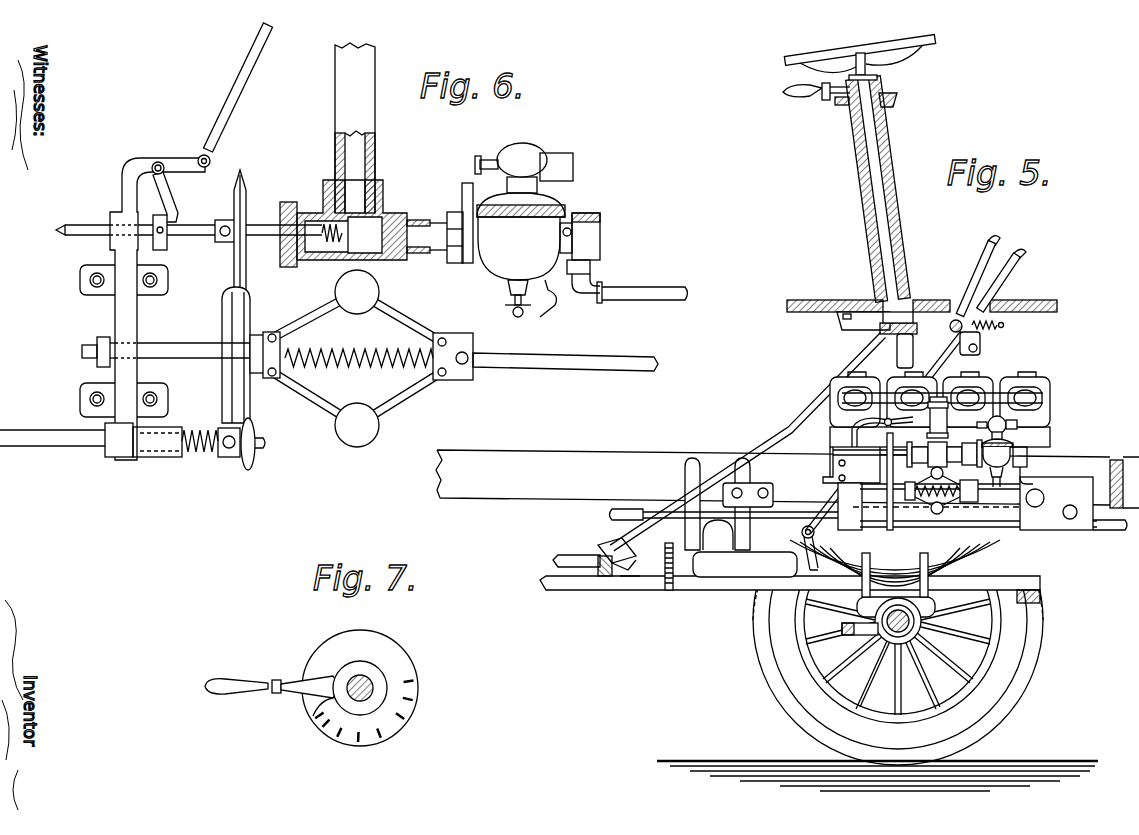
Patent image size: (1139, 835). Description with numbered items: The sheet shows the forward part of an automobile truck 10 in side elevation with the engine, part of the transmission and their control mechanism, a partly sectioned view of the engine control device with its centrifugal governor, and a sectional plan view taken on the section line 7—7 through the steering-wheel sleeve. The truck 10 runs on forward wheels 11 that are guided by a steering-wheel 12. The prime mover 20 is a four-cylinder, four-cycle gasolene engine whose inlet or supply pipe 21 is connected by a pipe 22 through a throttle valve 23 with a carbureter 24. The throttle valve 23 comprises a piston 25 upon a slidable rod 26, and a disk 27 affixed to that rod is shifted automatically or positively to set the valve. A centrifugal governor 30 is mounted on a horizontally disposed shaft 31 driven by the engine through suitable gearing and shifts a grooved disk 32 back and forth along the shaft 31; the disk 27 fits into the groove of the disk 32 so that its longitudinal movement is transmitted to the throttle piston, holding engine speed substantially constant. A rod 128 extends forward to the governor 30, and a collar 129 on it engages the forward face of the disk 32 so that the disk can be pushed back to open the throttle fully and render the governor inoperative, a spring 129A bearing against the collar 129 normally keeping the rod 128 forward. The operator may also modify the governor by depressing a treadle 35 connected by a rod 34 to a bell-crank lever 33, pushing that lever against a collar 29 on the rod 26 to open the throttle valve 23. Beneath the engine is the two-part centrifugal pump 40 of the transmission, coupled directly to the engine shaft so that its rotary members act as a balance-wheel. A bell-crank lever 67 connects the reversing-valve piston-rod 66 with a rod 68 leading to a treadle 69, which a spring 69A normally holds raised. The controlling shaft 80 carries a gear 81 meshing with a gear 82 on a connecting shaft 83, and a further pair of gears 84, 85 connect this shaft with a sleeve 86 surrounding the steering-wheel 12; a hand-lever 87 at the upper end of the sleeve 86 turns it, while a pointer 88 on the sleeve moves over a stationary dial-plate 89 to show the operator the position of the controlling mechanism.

In FIG. 5, the section line 7 is at (805, 72).
In FIG. 5, the truck 10 is at (563, 462).
In FIG. 5, the forward wheels 11 is at (1030, 645).
In FIG. 5, the steering-wheel 12 is at (790, 54).
In FIG. 5, the prime mover 20 is at (1027, 380).
In FIG. 5, the inlet or supply pipe 21 is at (990, 392).
In FIG. 6, the pipe 22 is at (350, 100).
In FIG. 5, the pipe 22 is at (935, 432).
In FIG. 6, the throttle valve 23 is at (386, 207).
In FIG. 5, the throttle valve 23 is at (943, 450).
In FIG. 6, the carbureter 24 is at (578, 198).
In FIG. 5, the carbureter 24 is at (998, 452).
In FIG. 6, the piston 25 is at (320, 216).
In FIG. 6, the slidable rod 26 is at (198, 228).
In FIG. 6, the disk 27 is at (246, 188).
In FIG. 5, the disk 27 is at (950, 505).
In FIG. 6, the collar 29 is at (165, 245).
In FIG. 6, the centrifugal governor 30 is at (392, 407).
In FIG. 6, the horizontally disposed shaft 31 is at (598, 362).
In FIG. 6, the grooved disk 32 is at (226, 310).
In FIG. 6, the bell-crank lever 33 is at (176, 200).
In FIG. 5, the bell-crank lever 33 is at (853, 421).
In FIG. 6, the rod 34 is at (232, 97).
In FIG. 5, the rod 34 is at (975, 358).
In FIG. 5, the treadle 35 is at (1020, 267).
In FIG. 5, the two-part centrifugal pump 40 is at (673, 462).
In FIG. 5, the reversing-valve piston-rod 66 is at (790, 535).
In FIG. 5, the bell-crank lever 67 is at (805, 512).
In FIG. 5, the rod 68 is at (845, 472).
In FIG. 5, the treadle 69 is at (985, 247).
In FIG. 5, the spring 69A is at (993, 324).
In FIG. 5, the controlling shaft 80 is at (573, 560).
In FIG. 5, the gear 81 is at (610, 572).
In FIG. 5, the gear 82 is at (603, 552).
In FIG. 5, the connecting shaft 83 is at (785, 417).
In FIG. 5, the gear 84 is at (913, 345).
In FIG. 5, the gear 85 is at (878, 332).
In FIG. 7, the sleeve 86 is at (365, 672).
In FIG. 5, the sleeve 86 is at (866, 210).
In FIG. 7, the hand-lever 87 is at (228, 682).
In FIG. 5, the hand-lever 87 is at (790, 98).
In FIG. 7, the pointer 88 is at (326, 701).
In FIG. 5, the pointer 88 is at (840, 101).
In FIG. 7, the dial-plate 89 is at (393, 732).
In FIG. 5, the dial-plate 89 is at (896, 97).
In FIG. 6, the rod 128 is at (72, 438).
In FIG. 5, the rod 128 is at (648, 510).
In FIG. 6, the collar 129 is at (255, 468).
In FIG. 6, the spring 129A is at (197, 455).